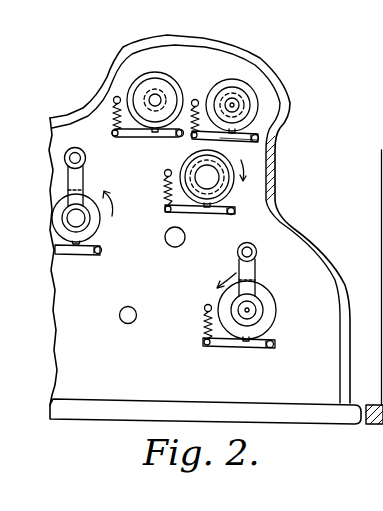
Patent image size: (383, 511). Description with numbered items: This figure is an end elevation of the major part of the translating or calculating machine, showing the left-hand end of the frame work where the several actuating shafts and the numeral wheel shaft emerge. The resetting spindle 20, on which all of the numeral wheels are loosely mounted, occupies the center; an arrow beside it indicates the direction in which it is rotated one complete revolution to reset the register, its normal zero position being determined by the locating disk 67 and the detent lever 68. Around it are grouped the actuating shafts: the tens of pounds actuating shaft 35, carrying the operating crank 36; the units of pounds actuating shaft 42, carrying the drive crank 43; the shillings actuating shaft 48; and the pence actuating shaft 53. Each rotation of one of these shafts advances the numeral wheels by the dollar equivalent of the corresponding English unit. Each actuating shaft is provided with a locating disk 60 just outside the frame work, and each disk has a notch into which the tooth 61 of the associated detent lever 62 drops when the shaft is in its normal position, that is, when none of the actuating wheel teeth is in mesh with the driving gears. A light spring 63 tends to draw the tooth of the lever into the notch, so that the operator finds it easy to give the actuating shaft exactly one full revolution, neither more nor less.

The resetting spindle 20 is at (209, 180).
The tens of pounds actuating shaft 35 is at (248, 309).
The operating crank 36 is at (251, 272).
The units of pounds actuating shaft 42 is at (78, 220).
The drive crank 43 is at (84, 169).
The shillings actuating shaft 48 is at (148, 95).
The pence actuating shaft 53 is at (234, 106).
The locating disk 60 is at (174, 81).
The tooth 61 is at (154, 129).
The detent lever 62 is at (132, 137).
The light spring 63 is at (204, 328).
The locating disk 67 is at (293, 155).
The detent lever 68 is at (195, 213).